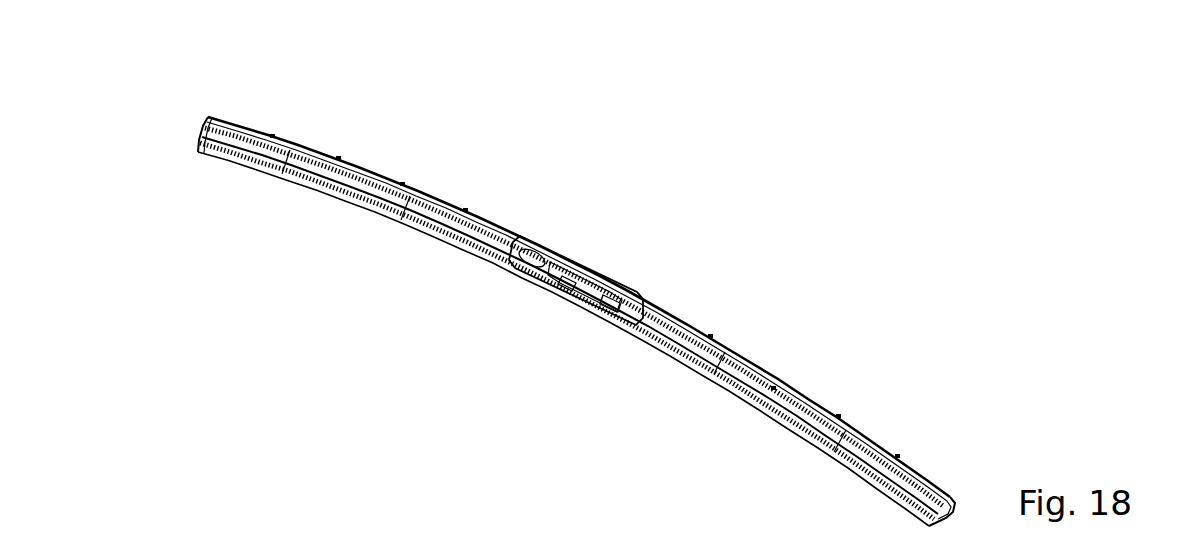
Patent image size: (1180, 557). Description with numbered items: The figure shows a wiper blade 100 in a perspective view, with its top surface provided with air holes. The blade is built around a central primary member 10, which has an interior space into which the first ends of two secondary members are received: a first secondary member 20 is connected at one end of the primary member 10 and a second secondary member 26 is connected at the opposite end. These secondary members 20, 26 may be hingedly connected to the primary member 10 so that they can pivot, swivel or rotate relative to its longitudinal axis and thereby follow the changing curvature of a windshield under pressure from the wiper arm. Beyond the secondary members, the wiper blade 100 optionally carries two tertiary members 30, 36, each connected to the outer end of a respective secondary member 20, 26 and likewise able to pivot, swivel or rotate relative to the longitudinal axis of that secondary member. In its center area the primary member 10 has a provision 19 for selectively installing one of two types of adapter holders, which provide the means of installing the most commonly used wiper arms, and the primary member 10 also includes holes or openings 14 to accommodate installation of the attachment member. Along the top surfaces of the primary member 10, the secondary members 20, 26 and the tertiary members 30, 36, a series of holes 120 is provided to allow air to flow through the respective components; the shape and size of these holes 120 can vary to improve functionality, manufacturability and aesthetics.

The wiper blade 100 is at (148, 470).
The primary member 10 is at (576, 248).
The holes/openings 14 is at (604, 241).
The provision 19 is at (649, 261).
The first secondary member 20 is at (576, 282).
The second secondary member 26 is at (569, 328).
The tertiary member 30 is at (243, 97).
The tertiary member 36 is at (976, 465).
The holes 120 is at (623, 263).